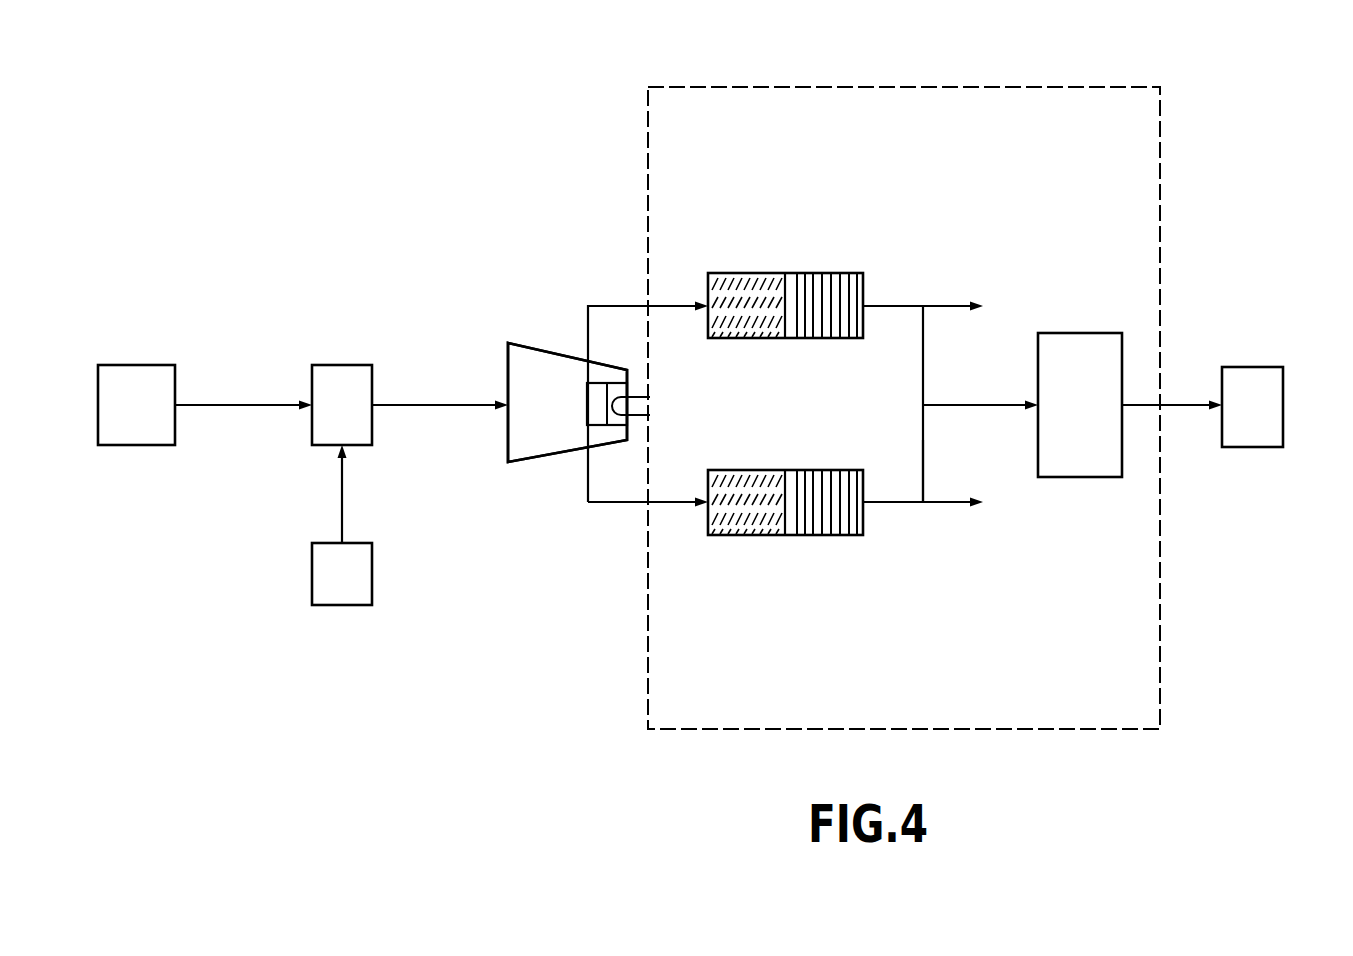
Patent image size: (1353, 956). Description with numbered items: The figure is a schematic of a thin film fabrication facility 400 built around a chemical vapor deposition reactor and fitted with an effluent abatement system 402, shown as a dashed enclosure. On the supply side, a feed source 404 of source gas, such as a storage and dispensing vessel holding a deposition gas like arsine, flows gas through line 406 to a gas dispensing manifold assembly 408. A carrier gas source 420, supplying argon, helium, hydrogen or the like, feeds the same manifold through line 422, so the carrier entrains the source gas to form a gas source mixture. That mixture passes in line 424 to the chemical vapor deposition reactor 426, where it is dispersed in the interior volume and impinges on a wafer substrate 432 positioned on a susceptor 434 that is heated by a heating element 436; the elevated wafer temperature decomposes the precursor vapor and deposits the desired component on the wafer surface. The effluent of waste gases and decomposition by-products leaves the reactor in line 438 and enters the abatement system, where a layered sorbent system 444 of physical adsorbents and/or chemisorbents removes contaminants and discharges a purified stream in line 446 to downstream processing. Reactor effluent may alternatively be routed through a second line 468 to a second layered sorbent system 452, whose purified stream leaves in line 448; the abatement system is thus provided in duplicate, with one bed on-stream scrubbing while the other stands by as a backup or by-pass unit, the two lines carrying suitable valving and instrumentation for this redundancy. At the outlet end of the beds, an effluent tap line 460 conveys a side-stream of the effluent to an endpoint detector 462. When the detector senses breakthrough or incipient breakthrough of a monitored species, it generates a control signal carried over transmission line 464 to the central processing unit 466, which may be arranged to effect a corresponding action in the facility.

The thin film fabrication facility 400 is at (426, 156).
The effluent abatement system 402 is at (925, 81).
The feed source 404 is at (147, 363).
The line 406 is at (240, 402).
The gas dispensing manifold assembly 408 is at (342, 363).
The carrier gas source 420 is at (312, 570).
The line 422 is at (338, 510).
The line 424 is at (435, 402).
The chemical vapor deposition reactor 426 is at (507, 432).
The wafer substrate 432 is at (580, 415).
The susceptor 434 is at (587, 387).
The heating element 436 is at (633, 413).
The line 438 is at (632, 303).
The layered sorbent system 444 is at (828, 273).
The line 446 is at (933, 300).
The line 448 is at (933, 507).
The second layered sorbent system 452 is at (827, 535).
The effluent tap line 460 is at (925, 360).
The endpoint detector 462 is at (1063, 332).
The transmission line 464 is at (1173, 403).
The central processing unit 466 is at (1252, 367).
The second line 468 is at (663, 502).